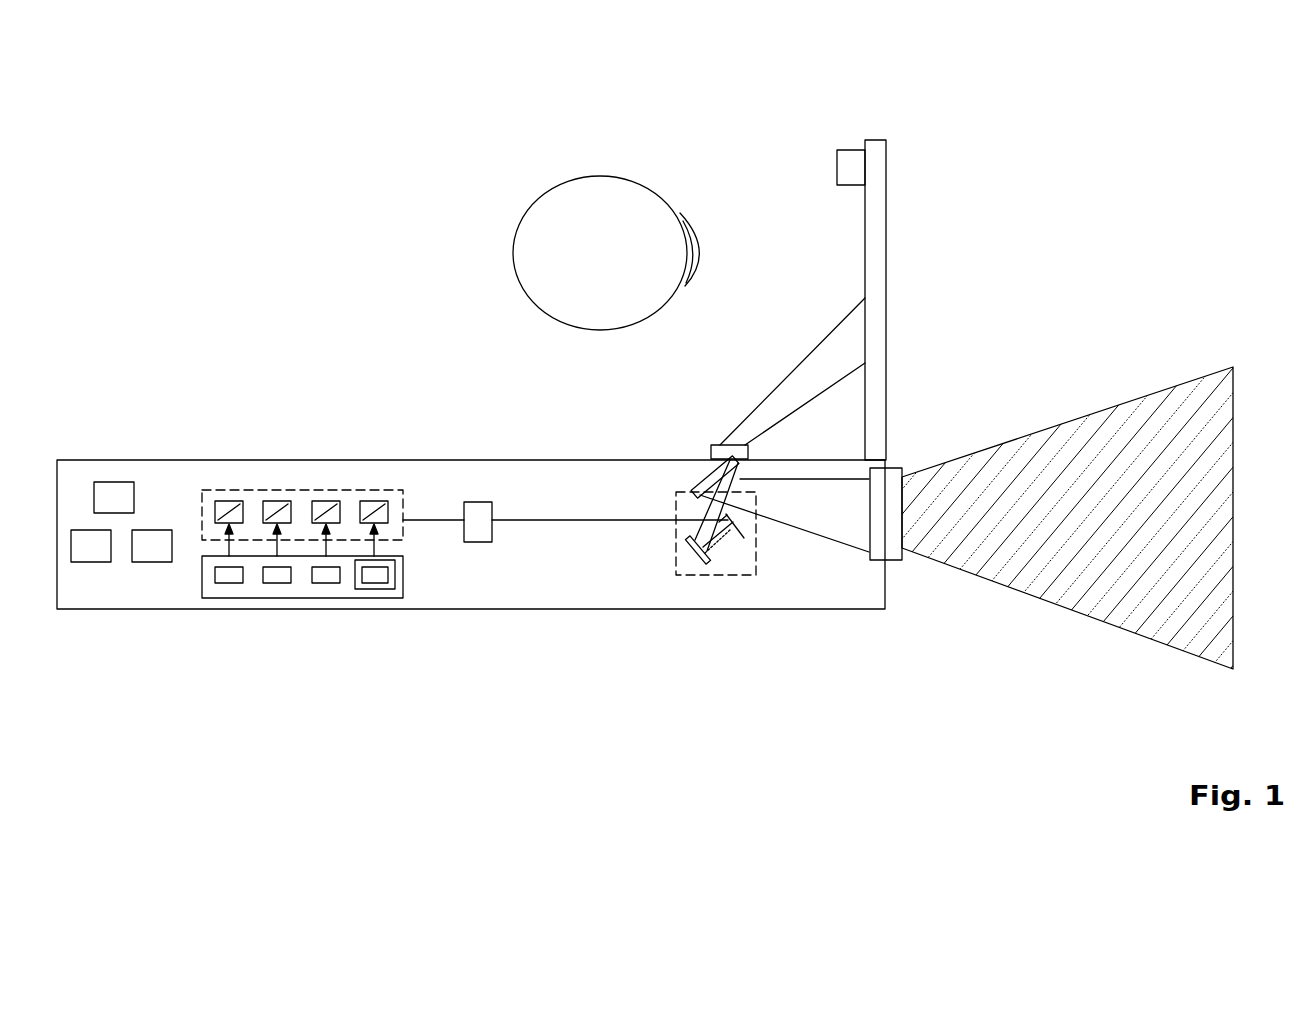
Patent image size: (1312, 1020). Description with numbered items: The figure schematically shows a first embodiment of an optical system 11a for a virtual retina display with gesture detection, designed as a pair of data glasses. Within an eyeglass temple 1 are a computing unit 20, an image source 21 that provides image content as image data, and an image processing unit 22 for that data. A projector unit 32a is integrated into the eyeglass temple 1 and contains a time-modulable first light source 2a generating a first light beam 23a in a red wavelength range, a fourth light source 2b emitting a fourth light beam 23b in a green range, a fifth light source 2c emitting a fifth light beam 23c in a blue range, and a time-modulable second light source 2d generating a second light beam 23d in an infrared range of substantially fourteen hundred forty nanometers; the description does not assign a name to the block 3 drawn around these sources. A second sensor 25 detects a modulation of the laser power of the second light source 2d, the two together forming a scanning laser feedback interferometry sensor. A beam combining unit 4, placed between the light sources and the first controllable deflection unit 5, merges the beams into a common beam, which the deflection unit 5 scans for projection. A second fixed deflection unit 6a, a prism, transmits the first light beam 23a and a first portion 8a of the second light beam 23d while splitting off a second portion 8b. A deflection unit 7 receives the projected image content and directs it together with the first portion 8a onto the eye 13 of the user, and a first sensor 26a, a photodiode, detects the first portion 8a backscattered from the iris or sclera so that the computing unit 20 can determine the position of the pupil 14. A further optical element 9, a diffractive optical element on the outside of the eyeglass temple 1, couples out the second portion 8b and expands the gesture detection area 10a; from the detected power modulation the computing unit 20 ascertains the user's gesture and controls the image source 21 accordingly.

The eyeglass temple 1 is at (165, 460).
The optical system 11a is at (262, 126).
The computing unit 20 is at (115, 482).
The image source 21 is at (90, 562).
The image processing unit 22 is at (150, 562).
The light source unit / driver unit 3 is at (342, 528).
The projector unit 32a is at (410, 478).
The first light beam 23a is at (233, 547).
The fourth light beam 23b is at (282, 547).
The fifth light beam 23c is at (330, 547).
The second light beam 23d is at (378, 547).
The first light source 2a is at (228, 583).
The fourth light source 2b is at (277, 583).
The fifth light source 2c is at (326, 583).
The second light source 2d is at (373, 583).
The second sensor 25 is at (391, 593).
The beam combining unit 4 is at (477, 542).
The first controllable deflection unit 5 is at (725, 577).
The second deflection unit 6a is at (702, 490).
The first portion of the second light beam 8a is at (783, 380).
The second portion of the second light beam 8b is at (800, 527).
The deflection unit 7 is at (887, 212).
The first sensor 26a is at (835, 167).
The further optical element 9 is at (895, 562).
The gesture detection area 10a is at (1043, 443).
The eye 13 is at (603, 177).
The pupil 14 is at (699, 253).